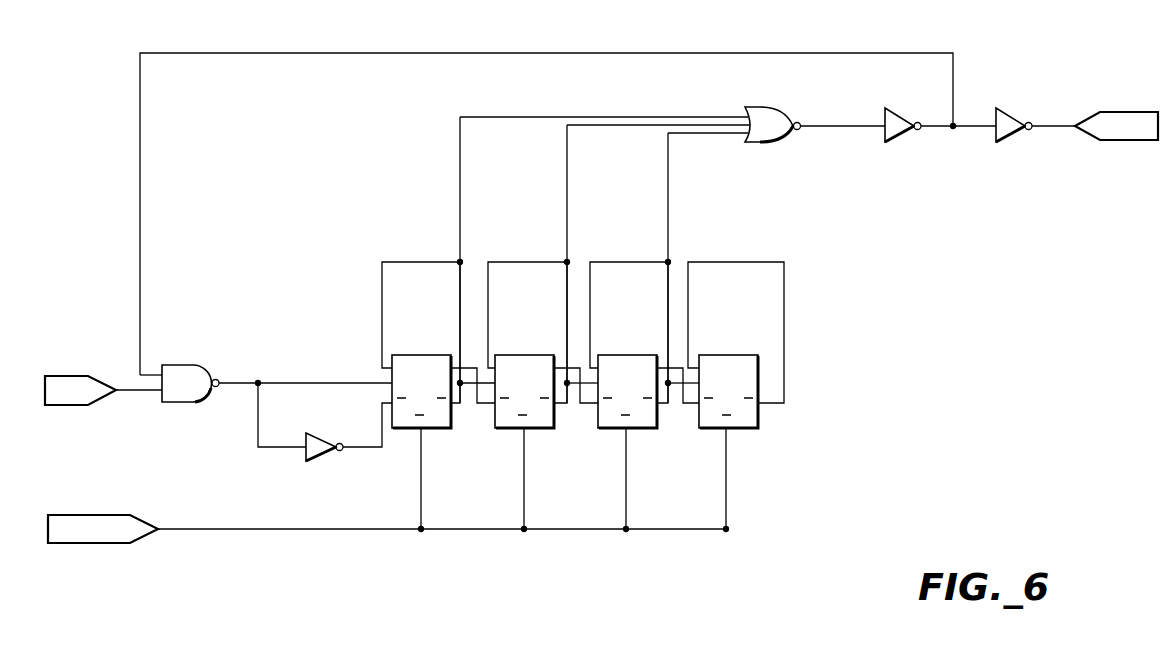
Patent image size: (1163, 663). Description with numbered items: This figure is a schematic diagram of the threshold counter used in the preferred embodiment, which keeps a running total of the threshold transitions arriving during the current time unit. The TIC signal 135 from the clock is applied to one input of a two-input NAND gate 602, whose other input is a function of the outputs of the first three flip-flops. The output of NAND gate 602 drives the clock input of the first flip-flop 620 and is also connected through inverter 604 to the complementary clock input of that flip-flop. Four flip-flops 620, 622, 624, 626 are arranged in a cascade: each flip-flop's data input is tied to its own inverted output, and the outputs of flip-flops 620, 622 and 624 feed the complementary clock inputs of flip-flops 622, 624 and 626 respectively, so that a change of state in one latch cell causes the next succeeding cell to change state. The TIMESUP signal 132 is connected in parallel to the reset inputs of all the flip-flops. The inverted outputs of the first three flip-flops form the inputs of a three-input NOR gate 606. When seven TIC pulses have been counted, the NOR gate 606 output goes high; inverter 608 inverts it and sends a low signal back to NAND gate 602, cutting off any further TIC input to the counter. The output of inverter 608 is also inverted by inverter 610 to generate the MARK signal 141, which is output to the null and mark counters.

The TIMESUP signal 132 is at (188, 529).
The TIC signal 135 is at (150, 391).
The MARK signal 141 is at (1048, 125).
The NAND gate 602 is at (183, 365).
The inverter 604 is at (318, 432).
The NOR gate 606 is at (788, 138).
The inverter 608 is at (902, 138).
The inverter 610 is at (1013, 136).
The first flip-flop 620 is at (407, 355).
The flip-flop 622 is at (510, 355).
The flip-flop 624 is at (613, 355).
The flip-flop 626 is at (714, 355).